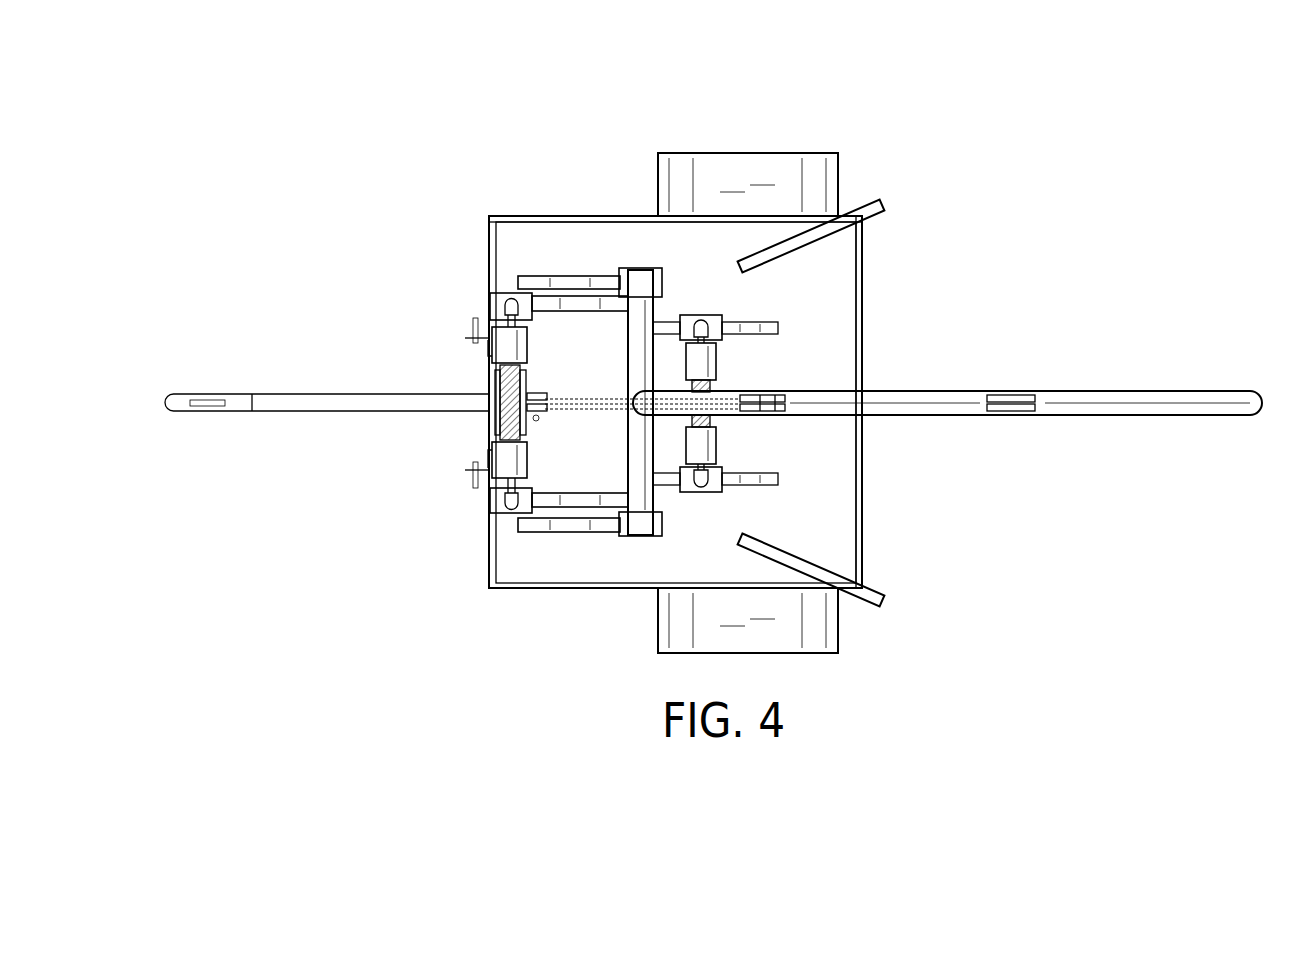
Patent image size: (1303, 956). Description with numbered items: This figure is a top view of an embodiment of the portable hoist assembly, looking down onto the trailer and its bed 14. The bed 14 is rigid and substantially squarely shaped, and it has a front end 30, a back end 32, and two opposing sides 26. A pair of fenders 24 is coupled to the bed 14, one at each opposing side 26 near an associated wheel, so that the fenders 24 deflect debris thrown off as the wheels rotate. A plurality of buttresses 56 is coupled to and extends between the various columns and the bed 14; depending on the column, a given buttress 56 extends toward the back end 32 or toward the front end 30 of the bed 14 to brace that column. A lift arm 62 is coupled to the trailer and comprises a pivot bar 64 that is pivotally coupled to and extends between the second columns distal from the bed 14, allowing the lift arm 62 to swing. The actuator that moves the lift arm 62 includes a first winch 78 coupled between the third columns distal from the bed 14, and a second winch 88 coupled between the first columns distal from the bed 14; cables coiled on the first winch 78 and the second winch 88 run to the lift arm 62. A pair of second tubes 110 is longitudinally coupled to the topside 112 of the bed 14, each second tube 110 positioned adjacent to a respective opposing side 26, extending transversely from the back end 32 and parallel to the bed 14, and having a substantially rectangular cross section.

The bed 14 is at (605, 567).
The fenders 24 is at (762, 178).
The opposing side 26 is at (607, 213).
The front end 30 is at (487, 553).
The back end 32 is at (863, 540).
The buttresses 56 is at (592, 300).
The lift arm 62 is at (1072, 392).
The pivot bar 64 is at (640, 493).
The first winch 78 is at (725, 362).
The second winch 88 is at (505, 345).
The second tubes 110 is at (878, 202).
The topside 112 is at (848, 465).